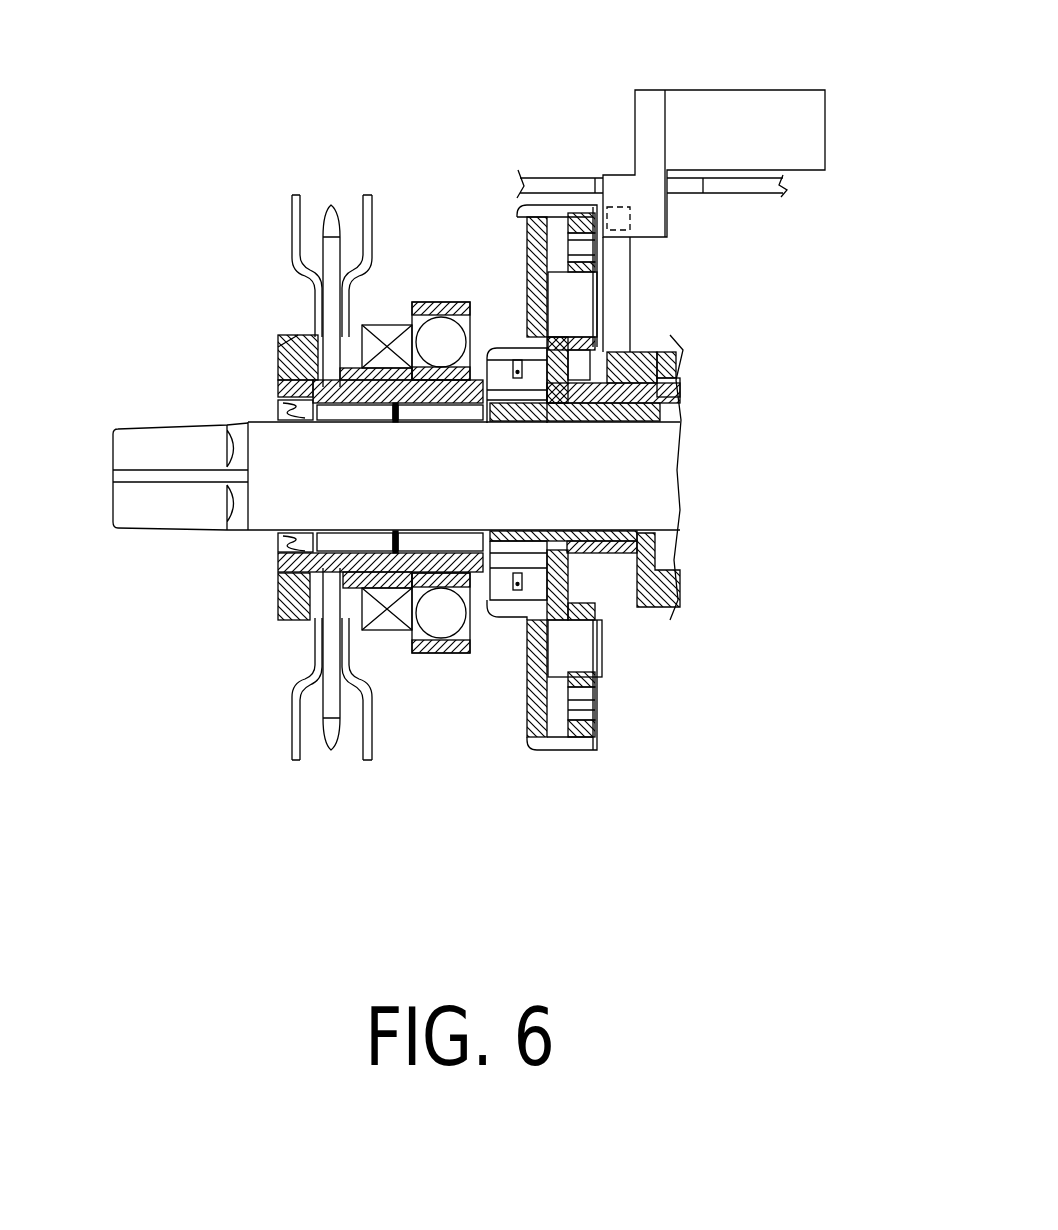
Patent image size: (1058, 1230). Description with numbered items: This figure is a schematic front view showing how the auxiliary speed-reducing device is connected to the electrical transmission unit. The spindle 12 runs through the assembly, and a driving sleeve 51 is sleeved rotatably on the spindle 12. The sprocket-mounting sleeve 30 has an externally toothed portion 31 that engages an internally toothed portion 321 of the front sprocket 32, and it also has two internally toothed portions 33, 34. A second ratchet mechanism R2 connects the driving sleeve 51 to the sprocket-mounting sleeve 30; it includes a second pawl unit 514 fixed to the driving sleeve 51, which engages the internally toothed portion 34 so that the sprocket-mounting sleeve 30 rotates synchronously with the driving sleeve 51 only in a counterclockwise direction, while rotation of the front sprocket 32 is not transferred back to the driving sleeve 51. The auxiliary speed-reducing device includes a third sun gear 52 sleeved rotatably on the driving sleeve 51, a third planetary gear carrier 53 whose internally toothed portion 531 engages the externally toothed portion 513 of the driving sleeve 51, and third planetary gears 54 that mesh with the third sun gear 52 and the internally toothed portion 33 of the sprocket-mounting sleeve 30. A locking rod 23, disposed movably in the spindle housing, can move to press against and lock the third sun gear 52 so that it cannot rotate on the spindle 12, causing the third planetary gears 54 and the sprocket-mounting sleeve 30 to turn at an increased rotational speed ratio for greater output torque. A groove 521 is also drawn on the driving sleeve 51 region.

The spindle 12 is at (160, 512).
The locking rod 23 is at (640, 103).
The sprocket-mounting sleeve 30 is at (385, 335).
The externally toothed portion 31 is at (282, 392).
The front sprocket 32 is at (330, 253).
The internally toothed portion 321 is at (330, 378).
The internally toothed portion 33 is at (580, 225).
The internally toothed portion 34 is at (500, 345).
The driving sleeve 51 is at (683, 363).
The externally toothed portion 513 is at (560, 415).
The second pawl unit 514 is at (498, 617).
The third sun gear 52 is at (628, 352).
The groove 521 is at (680, 392).
The third planetary gear carrier 53 is at (542, 618).
The internally toothed portion 531 is at (543, 350).
The third planetary gears 54 is at (603, 613).
The second ratchet mechanism R2 is at (487, 673).